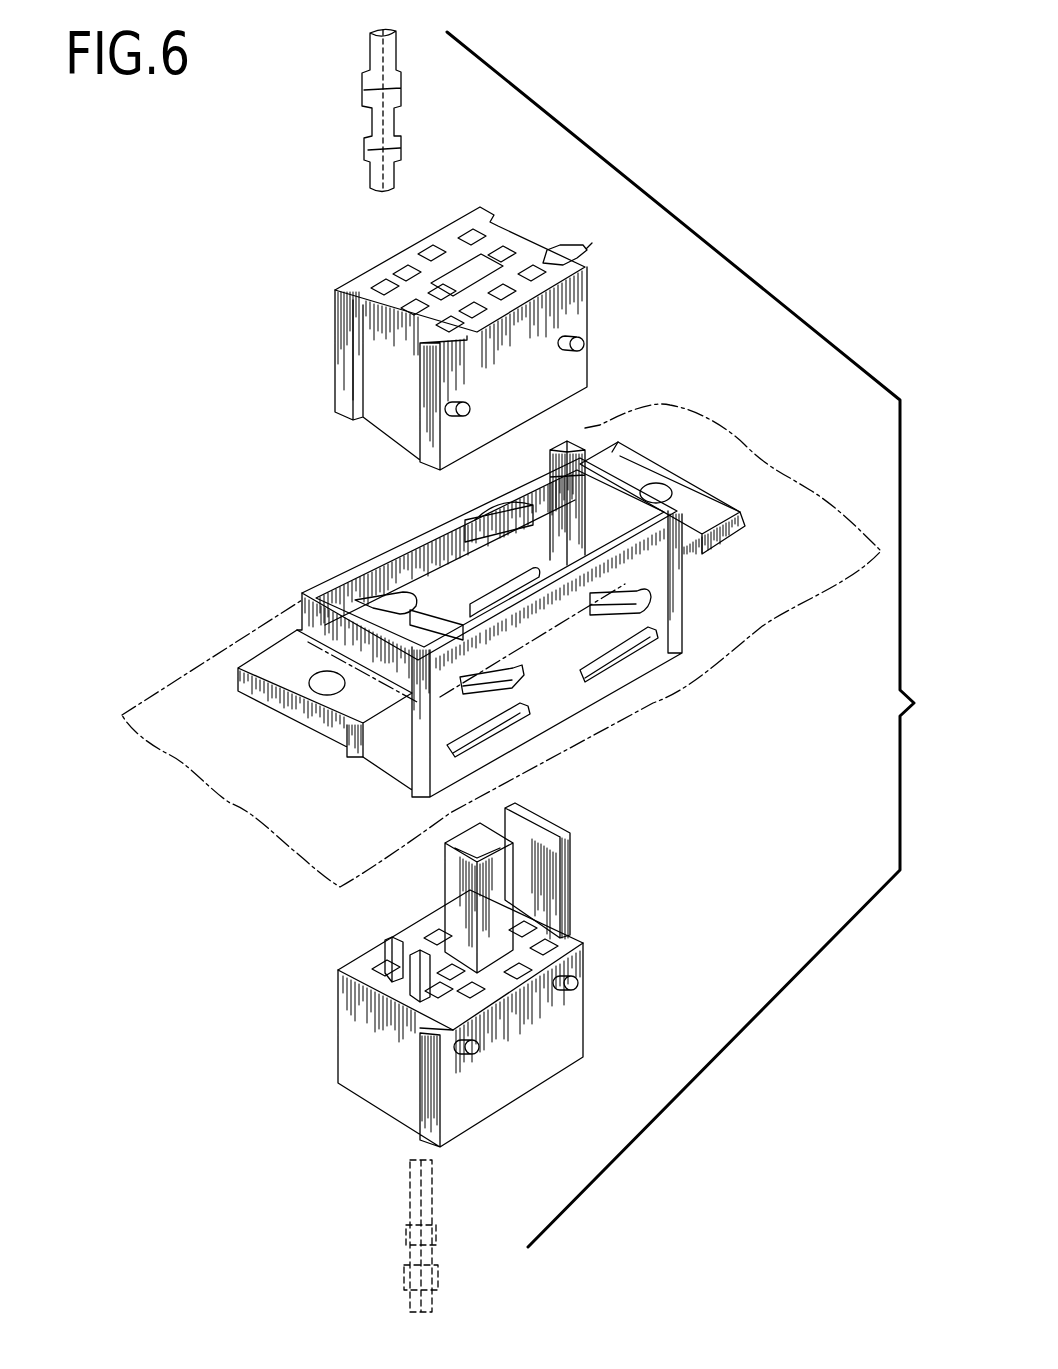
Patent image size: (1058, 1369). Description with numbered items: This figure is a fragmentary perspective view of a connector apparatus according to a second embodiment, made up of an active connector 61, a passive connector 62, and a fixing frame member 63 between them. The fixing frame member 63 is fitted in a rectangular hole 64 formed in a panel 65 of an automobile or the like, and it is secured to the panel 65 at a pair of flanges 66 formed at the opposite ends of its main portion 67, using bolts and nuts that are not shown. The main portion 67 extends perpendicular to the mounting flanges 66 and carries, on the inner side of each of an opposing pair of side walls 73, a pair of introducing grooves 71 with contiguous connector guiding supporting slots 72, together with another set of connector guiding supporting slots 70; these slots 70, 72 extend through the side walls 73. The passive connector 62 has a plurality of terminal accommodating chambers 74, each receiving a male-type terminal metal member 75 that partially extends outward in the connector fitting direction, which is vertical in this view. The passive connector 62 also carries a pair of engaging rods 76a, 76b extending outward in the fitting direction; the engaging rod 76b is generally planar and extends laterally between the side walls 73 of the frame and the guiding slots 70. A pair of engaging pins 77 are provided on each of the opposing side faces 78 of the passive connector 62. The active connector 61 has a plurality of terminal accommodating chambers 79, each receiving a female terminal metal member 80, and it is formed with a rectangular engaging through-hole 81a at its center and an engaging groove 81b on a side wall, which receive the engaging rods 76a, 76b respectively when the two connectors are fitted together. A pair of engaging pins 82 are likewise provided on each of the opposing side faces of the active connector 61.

The active connector 61 is at (572, 316).
The passive connector 62 is at (547, 1070).
The fixing frame member 63 is at (685, 580).
The rectangular hole 64 is at (728, 513).
The panel 65 is at (828, 527).
The flanges 66 is at (267, 708).
The main portion 67 is at (420, 768).
The connector guiding supporting slots 70 is at (513, 590).
The introducing grooves 71 is at (584, 447).
The connector guiding supporting slots 72 is at (500, 517).
The side walls 73 is at (397, 567).
The terminal accommodating chambers 74 is at (440, 1013).
The male-type terminal metal member 75 is at (400, 1250).
The engaging rod 76a is at (507, 895).
The engaging rod 76b is at (572, 850).
The engaging pins 77 is at (478, 1047).
The side faces 78 is at (463, 627).
The terminal accommodating chambers 79 is at (584, 245).
The female terminal metal member 80 is at (366, 148).
The rectangular engaging through-hole 81a is at (456, 262).
The engaging groove 81b is at (522, 248).
The engaging pins 82 is at (468, 408).